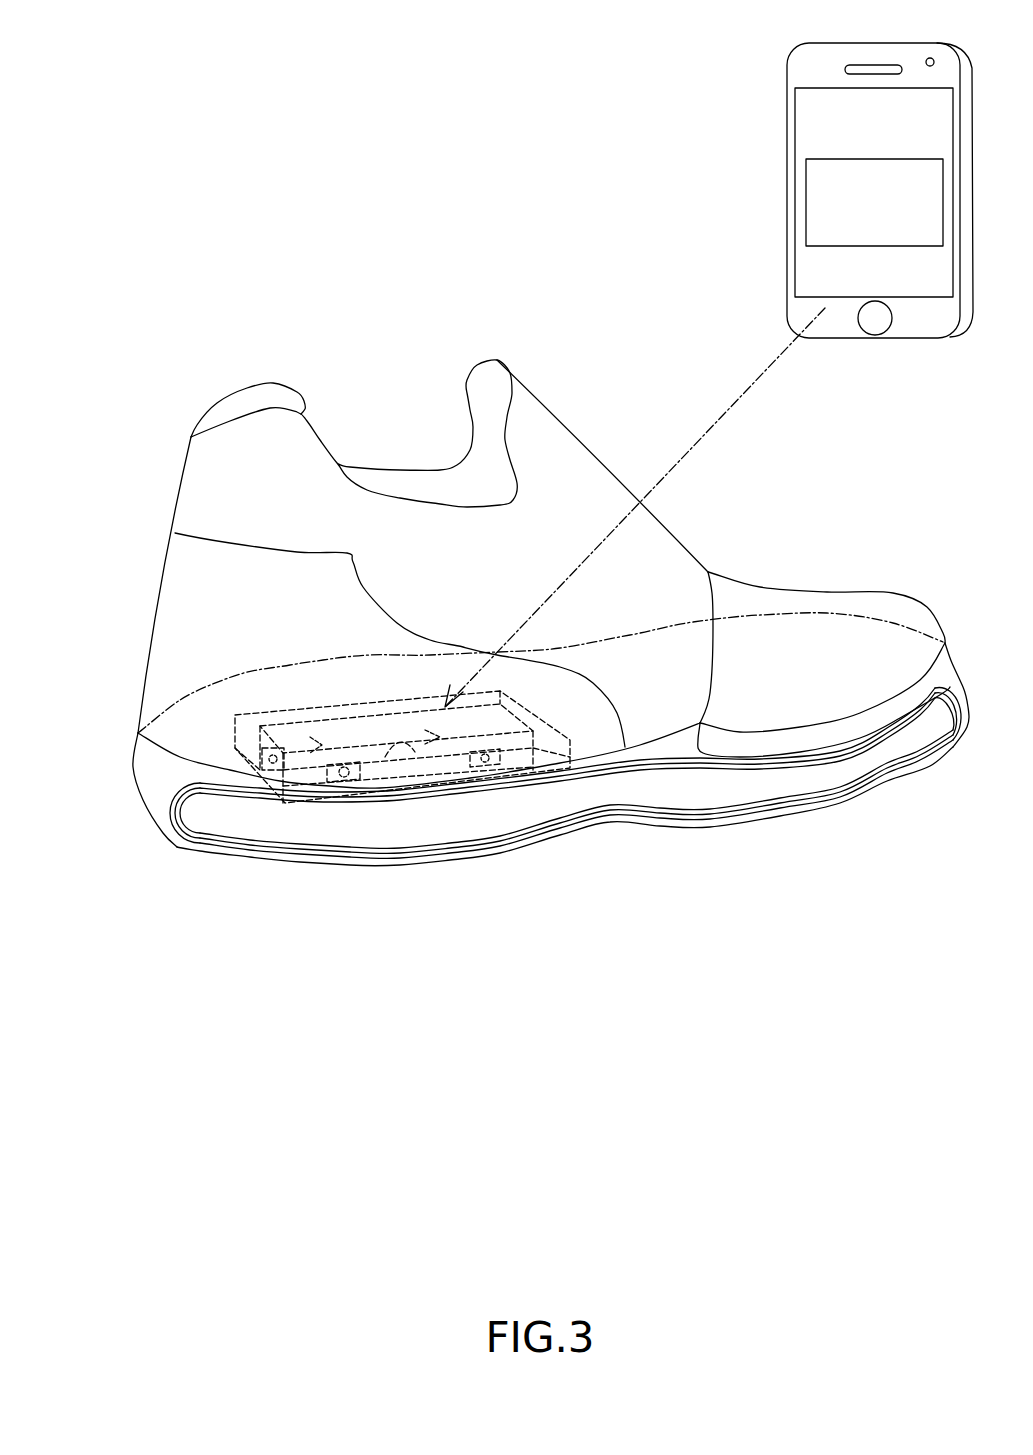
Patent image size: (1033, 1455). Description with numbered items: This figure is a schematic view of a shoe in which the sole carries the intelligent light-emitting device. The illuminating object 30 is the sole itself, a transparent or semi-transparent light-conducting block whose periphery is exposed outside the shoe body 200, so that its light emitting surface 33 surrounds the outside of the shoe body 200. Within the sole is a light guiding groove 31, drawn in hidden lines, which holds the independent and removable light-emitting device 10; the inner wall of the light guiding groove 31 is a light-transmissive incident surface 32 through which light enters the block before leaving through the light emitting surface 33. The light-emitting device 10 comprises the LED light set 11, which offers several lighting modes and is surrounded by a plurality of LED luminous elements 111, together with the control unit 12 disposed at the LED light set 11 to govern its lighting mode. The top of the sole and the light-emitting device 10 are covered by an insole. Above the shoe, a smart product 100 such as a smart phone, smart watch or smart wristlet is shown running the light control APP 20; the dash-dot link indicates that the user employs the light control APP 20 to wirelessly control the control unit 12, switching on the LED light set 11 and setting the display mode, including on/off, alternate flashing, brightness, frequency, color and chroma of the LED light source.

The shoe body 200 is at (222, 348).
The smart product 100 is at (787, 70).
The light control APP 20 is at (874, 202).
The light-emitting device 10 is at (347, 693).
The LED light set 11 is at (323, 1037).
The LED luminous elements 111 is at (390, 738).
The control unit 12 is at (322, 748).
The illuminating object 30 is at (192, 810).
The light guiding groove 31 is at (232, 695).
The incident surface 32 is at (368, 778).
The light emitting surface 33 is at (455, 832).